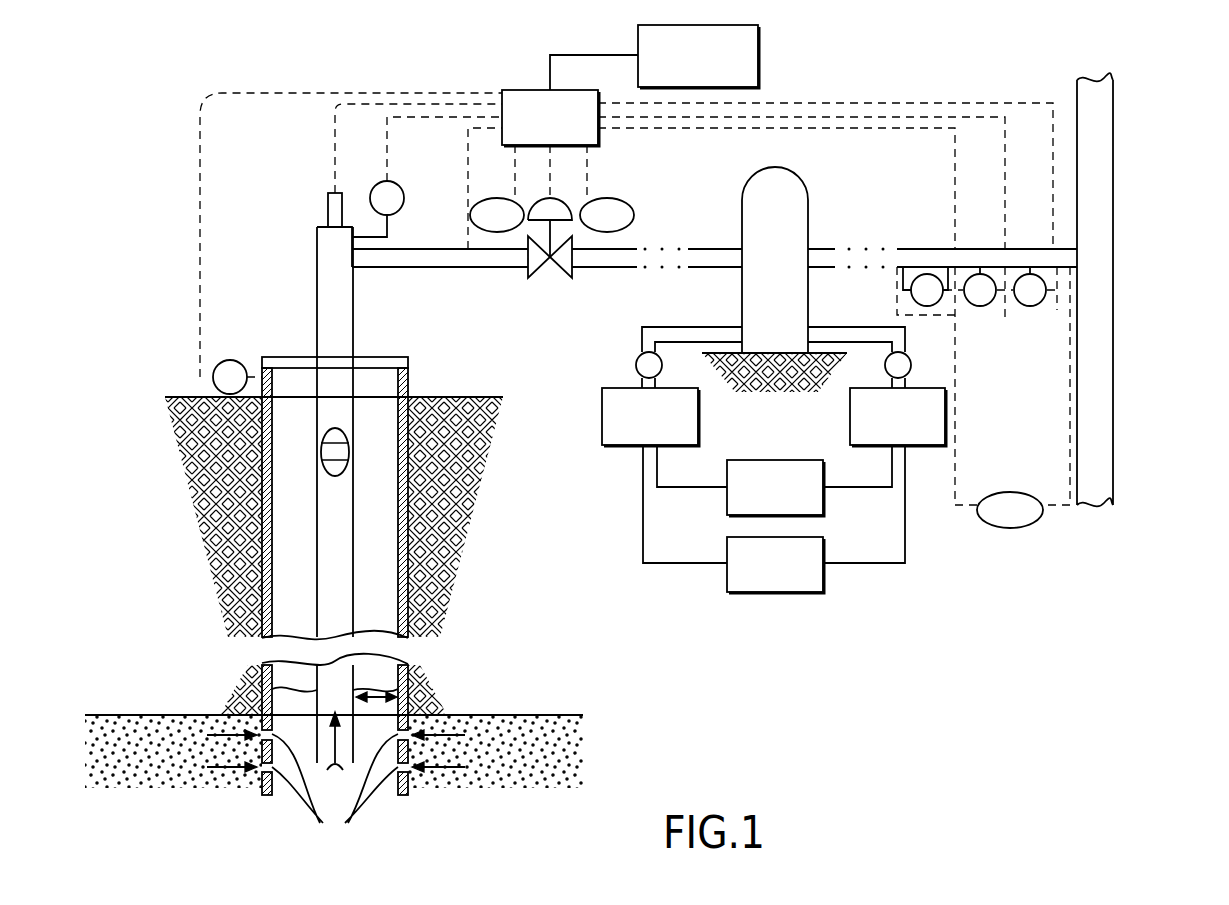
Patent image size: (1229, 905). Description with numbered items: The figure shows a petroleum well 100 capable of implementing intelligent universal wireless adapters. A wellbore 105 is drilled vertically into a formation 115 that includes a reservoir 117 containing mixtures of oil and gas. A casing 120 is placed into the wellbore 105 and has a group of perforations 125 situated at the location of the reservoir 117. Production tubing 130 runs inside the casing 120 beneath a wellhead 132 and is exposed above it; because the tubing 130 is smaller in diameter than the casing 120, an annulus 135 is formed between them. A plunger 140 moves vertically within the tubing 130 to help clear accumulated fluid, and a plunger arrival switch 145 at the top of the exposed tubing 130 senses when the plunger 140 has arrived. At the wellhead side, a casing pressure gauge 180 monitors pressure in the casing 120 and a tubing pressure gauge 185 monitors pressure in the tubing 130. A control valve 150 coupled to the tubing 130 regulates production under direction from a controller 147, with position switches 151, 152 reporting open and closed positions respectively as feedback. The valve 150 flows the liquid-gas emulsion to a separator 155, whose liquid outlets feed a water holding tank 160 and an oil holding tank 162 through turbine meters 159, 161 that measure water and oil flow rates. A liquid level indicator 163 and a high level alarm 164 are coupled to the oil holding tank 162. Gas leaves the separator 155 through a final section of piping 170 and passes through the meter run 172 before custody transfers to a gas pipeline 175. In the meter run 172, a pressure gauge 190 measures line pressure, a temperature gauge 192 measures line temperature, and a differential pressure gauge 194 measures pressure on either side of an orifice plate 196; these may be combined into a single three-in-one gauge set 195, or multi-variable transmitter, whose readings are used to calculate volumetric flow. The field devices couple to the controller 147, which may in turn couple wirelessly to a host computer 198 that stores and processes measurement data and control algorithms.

The petroleum well 100 is at (150, 120).
The wellbore 105 is at (178, 639).
The formation 115 is at (432, 447).
The reservoir 117 is at (525, 762).
The casing 120 is at (410, 622).
The perforations 125 is at (335, 794).
The production tubing 130 is at (262, 690).
The wellhead 132 is at (298, 356).
The annulus 135 is at (398, 692).
The plunger 140 is at (324, 430).
The plunger arrival switch 145 is at (328, 201).
The controller 147 is at (535, 130).
The control valve 150 is at (556, 272).
The position switch 151 is at (497, 232).
The position switch 152 is at (607, 232).
The separator 155 is at (760, 291).
The turbine meter 159 is at (636, 364).
The water holding tank 160 is at (635, 440).
The turbine meter 161 is at (910, 372).
The oil holding tank 162 is at (883, 440).
The liquid level indicator 163 is at (760, 512).
The high level alarm 164 is at (760, 589).
The piping 170 is at (826, 248).
The meter run 172 is at (942, 192).
The gas pipeline 175 is at (1113, 218).
The casing pressure gauge 180 is at (216, 364).
The tubing pressure gauge 185 is at (395, 199).
The pressure gauge 190 is at (980, 306).
The temperature gauge 192 is at (1030, 306).
The differential pressure gauge 194 is at (928, 306).
The three-in-one gauge set 195 is at (1035, 525).
The orifice plate 196 is at (925, 266).
The host computer 198 is at (758, 52).